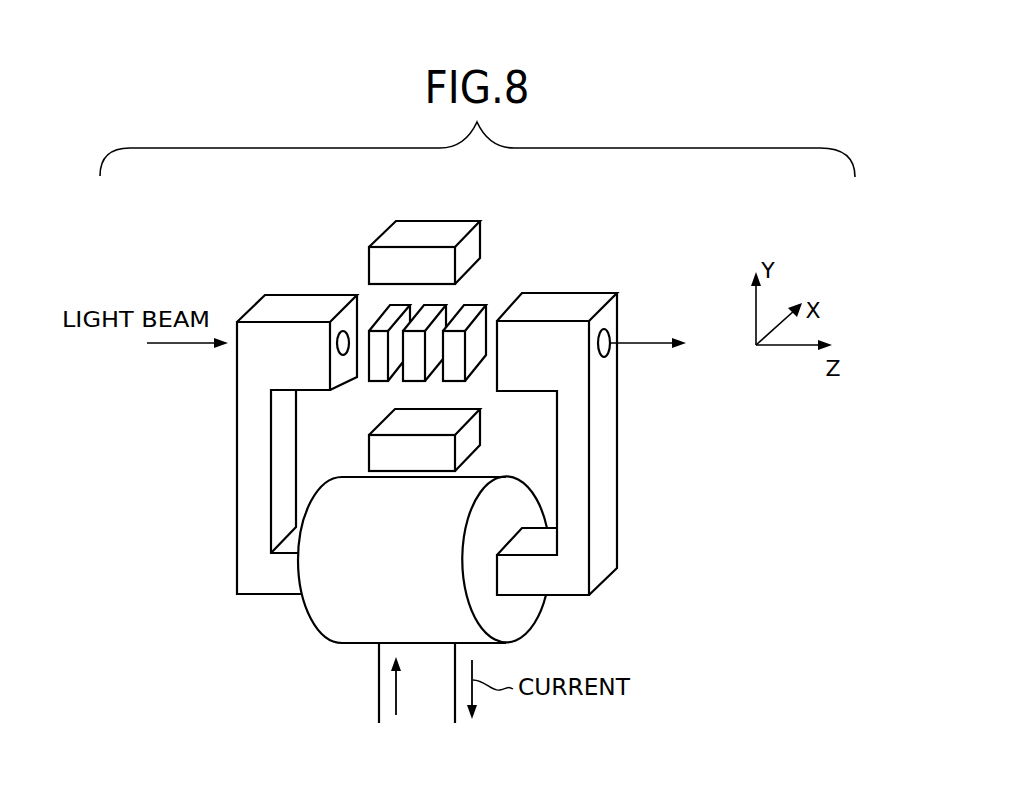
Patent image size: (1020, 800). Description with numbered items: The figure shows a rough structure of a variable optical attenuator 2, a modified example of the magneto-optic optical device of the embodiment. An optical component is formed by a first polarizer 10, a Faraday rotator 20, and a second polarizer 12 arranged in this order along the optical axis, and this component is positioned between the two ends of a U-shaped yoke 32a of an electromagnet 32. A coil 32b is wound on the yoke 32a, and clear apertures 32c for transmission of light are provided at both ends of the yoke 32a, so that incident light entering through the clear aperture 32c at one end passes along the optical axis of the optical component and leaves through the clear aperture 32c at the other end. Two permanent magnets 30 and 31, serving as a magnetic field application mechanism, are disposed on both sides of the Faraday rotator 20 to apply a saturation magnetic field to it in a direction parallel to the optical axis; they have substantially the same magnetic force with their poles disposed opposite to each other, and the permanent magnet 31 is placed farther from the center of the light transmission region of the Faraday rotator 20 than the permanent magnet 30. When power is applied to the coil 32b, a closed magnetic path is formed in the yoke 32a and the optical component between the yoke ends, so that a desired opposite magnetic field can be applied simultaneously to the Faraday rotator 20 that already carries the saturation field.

The variable optical attenuator 2 is at (599, 229).
The first polarizer 10 is at (395, 311).
The second polarizer 12 is at (474, 309).
The Faraday rotator 20 is at (412, 380).
The permanent magnet 30 is at (413, 229).
The permanent magnet 31 is at (472, 436).
The electromagnet 32 is at (698, 527).
The yoke 32a is at (606, 538).
The coil 32b is at (512, 618).
The clear aperture 32c is at (612, 326).